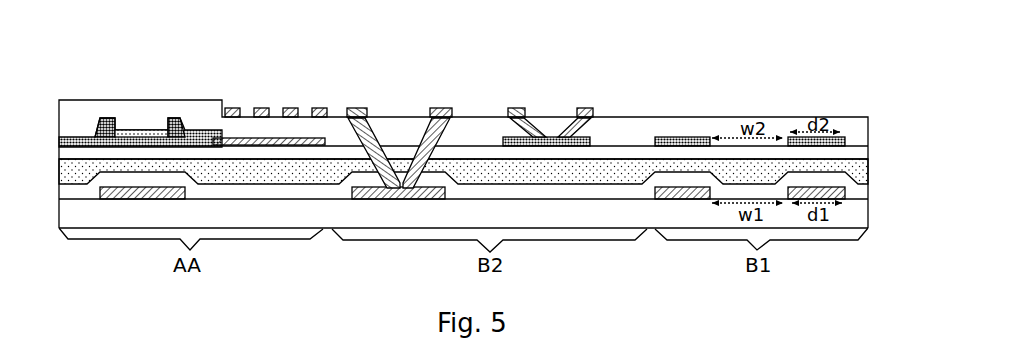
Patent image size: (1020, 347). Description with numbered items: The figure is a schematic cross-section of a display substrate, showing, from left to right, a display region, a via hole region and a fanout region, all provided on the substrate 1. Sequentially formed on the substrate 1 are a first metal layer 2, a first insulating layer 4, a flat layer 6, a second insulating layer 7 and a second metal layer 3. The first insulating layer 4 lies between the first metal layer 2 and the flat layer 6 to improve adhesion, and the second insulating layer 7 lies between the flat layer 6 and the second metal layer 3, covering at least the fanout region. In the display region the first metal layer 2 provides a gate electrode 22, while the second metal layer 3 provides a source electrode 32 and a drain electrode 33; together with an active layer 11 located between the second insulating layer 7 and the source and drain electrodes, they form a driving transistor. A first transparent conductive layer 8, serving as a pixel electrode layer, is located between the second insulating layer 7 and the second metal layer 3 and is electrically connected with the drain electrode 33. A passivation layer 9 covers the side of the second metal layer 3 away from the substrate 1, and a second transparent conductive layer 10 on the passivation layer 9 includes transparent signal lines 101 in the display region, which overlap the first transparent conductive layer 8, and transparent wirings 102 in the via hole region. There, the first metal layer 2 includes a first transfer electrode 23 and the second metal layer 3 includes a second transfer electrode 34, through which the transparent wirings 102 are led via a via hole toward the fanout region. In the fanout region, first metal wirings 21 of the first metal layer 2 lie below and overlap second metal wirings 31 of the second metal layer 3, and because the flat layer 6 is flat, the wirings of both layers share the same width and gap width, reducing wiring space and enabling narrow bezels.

The substrate 1 is at (848, 213).
The first metal layer 2 is at (473, 233).
The second metal layer 3 is at (432, 105).
The first insulating layer 4 is at (847, 192).
The flat layer 6 is at (857, 171).
The second insulating layer 7 is at (853, 152).
The first transparent conductive layer 8 is at (245, 138).
The passivation layer 9 is at (853, 131).
The second transparent conductive layer 10 is at (365, 60).
The active layer 11 is at (142, 130).
The first metal wirings 21 is at (683, 199).
The gate electrode 22 is at (137, 199).
The first transfer electrode 23 is at (377, 199).
The second metal wirings 31 is at (683, 136).
The source electrode 32 is at (108, 122).
The drain electrode 33 is at (175, 122).
The second transfer electrode 34 is at (587, 136).
The transparent signal lines 101 is at (290, 108).
The transparent wirings 102 is at (355, 108).